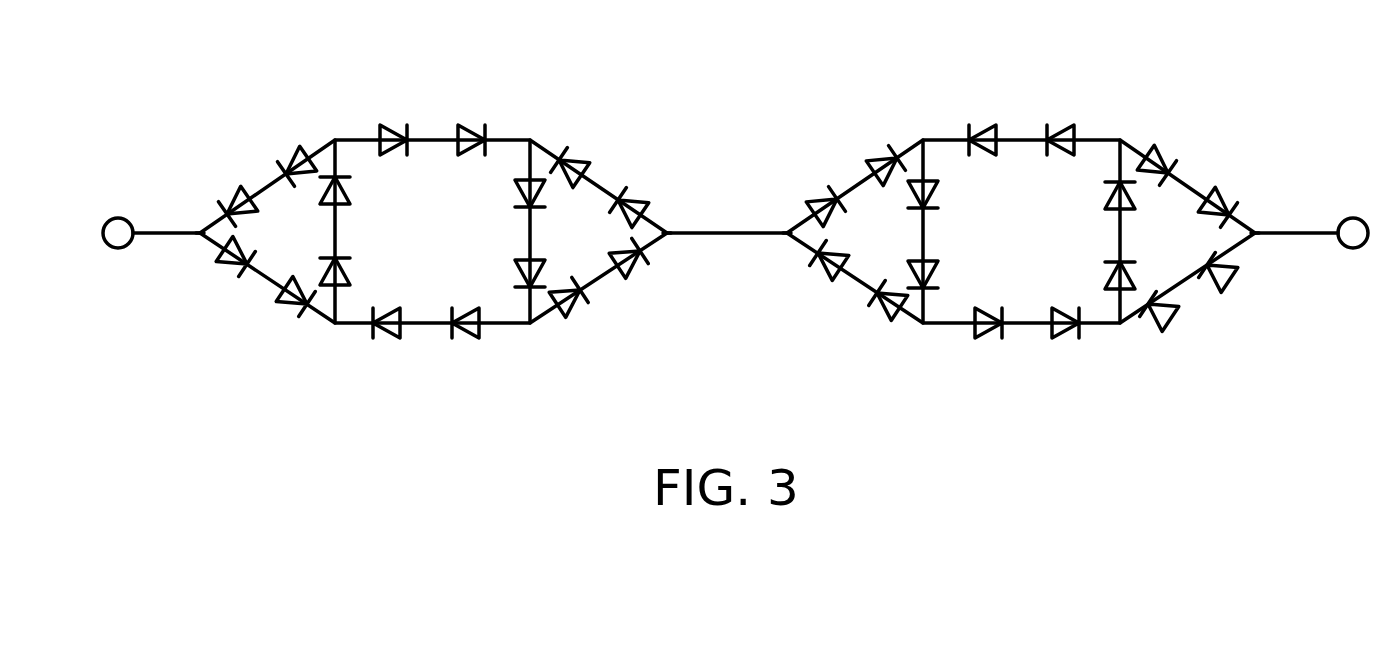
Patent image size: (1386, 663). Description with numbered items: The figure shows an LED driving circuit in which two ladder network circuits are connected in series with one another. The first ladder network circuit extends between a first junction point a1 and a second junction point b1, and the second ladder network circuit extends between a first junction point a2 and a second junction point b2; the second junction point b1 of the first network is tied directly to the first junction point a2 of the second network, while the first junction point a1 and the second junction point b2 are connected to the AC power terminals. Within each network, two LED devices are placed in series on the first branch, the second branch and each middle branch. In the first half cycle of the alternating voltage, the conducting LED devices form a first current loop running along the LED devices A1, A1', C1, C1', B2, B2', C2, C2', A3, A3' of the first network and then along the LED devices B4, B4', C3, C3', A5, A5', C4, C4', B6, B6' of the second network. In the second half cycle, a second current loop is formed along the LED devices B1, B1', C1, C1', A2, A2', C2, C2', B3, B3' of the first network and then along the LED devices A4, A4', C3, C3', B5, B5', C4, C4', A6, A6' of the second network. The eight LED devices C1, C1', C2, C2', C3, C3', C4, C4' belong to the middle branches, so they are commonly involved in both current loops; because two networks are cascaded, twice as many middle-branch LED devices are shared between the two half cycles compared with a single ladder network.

The first junction point a1 is at (188, 252).
The second junction point b1 is at (684, 251).
The first junction point a2 is at (771, 251).
The second junction point b2 is at (1273, 256).
The LED device B1 is at (223, 192).
The LED device B1' is at (293, 150).
The LED device A1 is at (233, 277).
The LED device A1' is at (296, 318).
The LED device B2 is at (400, 118).
The LED device B2' is at (482, 118).
The LED device A2 is at (389, 346).
The LED device A2' is at (478, 346).
The LED device C1 is at (360, 194).
The LED device C1' is at (368, 274).
The LED device C2 is at (509, 194).
The LED device C2' is at (503, 274).
The LED device B3 is at (581, 152).
The LED device B3' is at (651, 192).
The LED device A3 is at (580, 316).
The LED device A3' is at (646, 276).
The LED device B4 is at (812, 193).
The LED device B4' is at (872, 152).
The LED device A4 is at (818, 278).
The LED device A4' is at (877, 318).
The LED device B5 is at (987, 118).
The LED device B5' is at (1073, 118).
The LED device A5 is at (992, 346).
The LED device A5' is at (1074, 346).
The LED device C3 is at (947, 197).
The LED device C3' is at (954, 276).
The LED device C4 is at (1098, 197).
The LED device C4' is at (1096, 276).
The LED device B6 is at (1168, 150).
The LED device B6' is at (1239, 195).
The LED device A6 is at (1171, 322).
The LED device A6' is at (1236, 281).